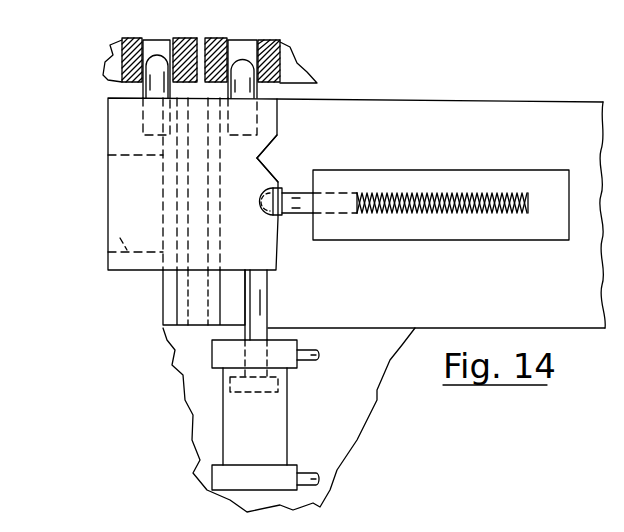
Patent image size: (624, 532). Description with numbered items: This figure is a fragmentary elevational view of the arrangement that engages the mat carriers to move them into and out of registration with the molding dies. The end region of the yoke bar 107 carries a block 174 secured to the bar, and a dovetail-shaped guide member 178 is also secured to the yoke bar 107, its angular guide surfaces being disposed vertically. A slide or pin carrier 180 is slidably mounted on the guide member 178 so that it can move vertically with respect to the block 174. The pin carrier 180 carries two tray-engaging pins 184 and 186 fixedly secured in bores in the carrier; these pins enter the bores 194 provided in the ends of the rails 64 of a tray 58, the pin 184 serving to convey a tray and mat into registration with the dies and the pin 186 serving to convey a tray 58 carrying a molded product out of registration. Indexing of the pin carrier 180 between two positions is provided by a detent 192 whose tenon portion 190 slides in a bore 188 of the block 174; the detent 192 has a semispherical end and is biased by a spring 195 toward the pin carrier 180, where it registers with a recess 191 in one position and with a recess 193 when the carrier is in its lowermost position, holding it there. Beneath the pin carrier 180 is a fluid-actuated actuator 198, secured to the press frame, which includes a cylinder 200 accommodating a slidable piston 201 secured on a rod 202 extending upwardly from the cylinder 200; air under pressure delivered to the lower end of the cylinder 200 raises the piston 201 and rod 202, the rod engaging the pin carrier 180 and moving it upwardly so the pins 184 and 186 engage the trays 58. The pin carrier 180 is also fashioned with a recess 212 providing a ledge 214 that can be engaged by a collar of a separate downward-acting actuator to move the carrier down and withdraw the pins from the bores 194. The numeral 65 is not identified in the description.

The tray 58 is at (108, 85).
The rail 64 is at (122, 60).
The bushing 65 is at (283, 67).
The yoke bar 107 is at (470, 80).
The block 174 is at (448, 252).
The dovetail-shaped guide member 178 is at (185, 297).
The pin carrier 180 is at (108, 122).
The pin 184 is at (247, 62).
The pin 186 is at (146, 57).
The bore 188 is at (396, 193).
The tenon portion 190 is at (292, 192).
The recess 191 is at (256, 202).
The detent 192 is at (278, 193).
The recess 193 is at (262, 186).
The bore 194 is at (157, 45).
The spring 195 is at (460, 193).
The actuator 198 is at (222, 425).
The cylinder 200 is at (287, 432).
The piston 201 is at (272, 392).
The rod 202 is at (263, 303).
The recess 212 is at (130, 180).
The ledge 214 is at (121, 240).